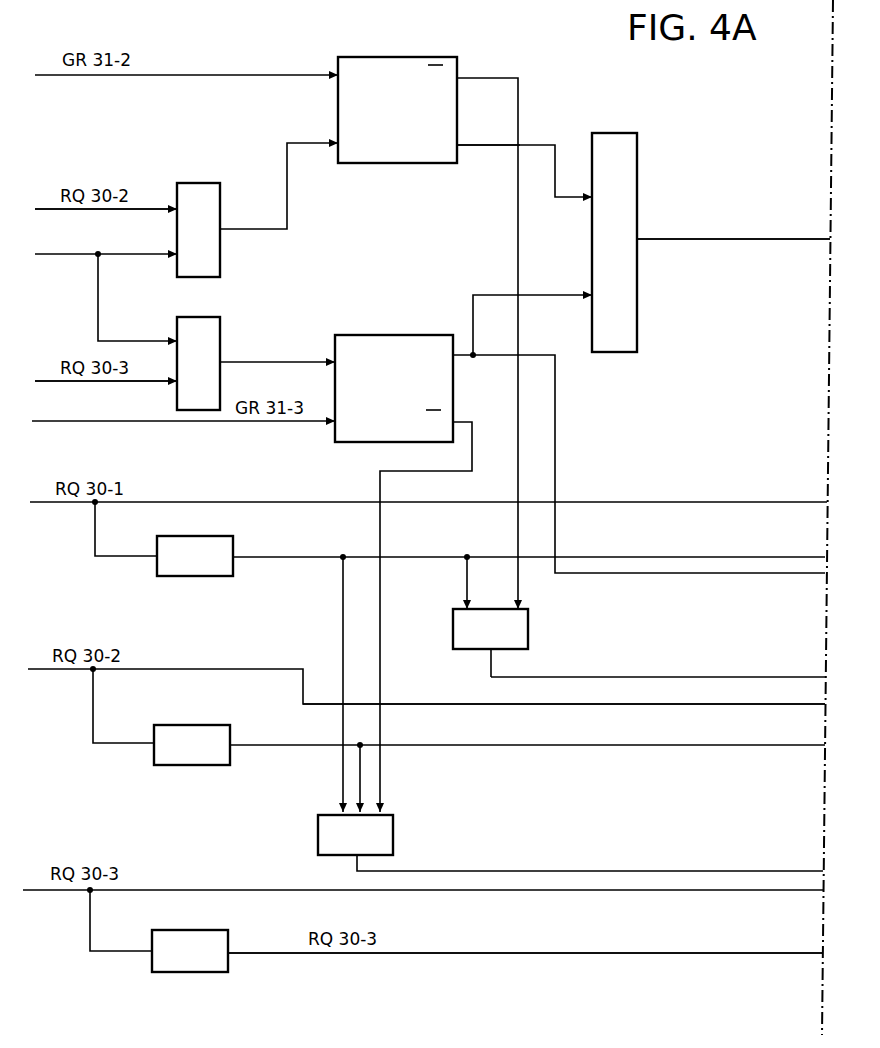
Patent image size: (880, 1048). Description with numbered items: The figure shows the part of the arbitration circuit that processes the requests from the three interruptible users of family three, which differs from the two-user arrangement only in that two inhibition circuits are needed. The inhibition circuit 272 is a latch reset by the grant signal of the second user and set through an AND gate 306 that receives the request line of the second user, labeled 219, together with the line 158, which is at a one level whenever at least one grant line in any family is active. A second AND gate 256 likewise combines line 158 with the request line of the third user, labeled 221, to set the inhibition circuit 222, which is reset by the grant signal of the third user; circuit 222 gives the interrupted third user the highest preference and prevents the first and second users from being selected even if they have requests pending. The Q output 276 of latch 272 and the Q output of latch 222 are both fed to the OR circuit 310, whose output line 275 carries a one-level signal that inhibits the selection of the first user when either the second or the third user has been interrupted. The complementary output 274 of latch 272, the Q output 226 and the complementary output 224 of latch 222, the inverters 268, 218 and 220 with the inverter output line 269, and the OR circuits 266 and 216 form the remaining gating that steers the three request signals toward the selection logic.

The inhibition circuit 272 is at (419, 57).
The Q-bar output line of flip-flop 272 274 is at (497, 77).
The Q output 276 is at (488, 150).
The OR circuit 310 is at (620, 132).
The output line 275 is at (734, 239).
The AND gate 306 is at (221, 192).
The AND gate 256 is at (221, 327).
The line 158 is at (70, 256).
The RQ 30-2 signal line 219 is at (76, 212).
The RQ 30-3 signal line 221 is at (75, 385).
The inhibition circuit 222 is at (413, 335).
The Q output line of flip-flop 222 226 is at (556, 420).
The Q-bar output line of flip-flop 222 224 is at (381, 607).
The inverter 268 is at (234, 546).
The inverter output line 269 is at (640, 557).
The OR gate 266 is at (531, 635).
The inverter 218 is at (231, 734).
The OR gate 216 is at (394, 840).
The inverter 220 is at (229, 940).